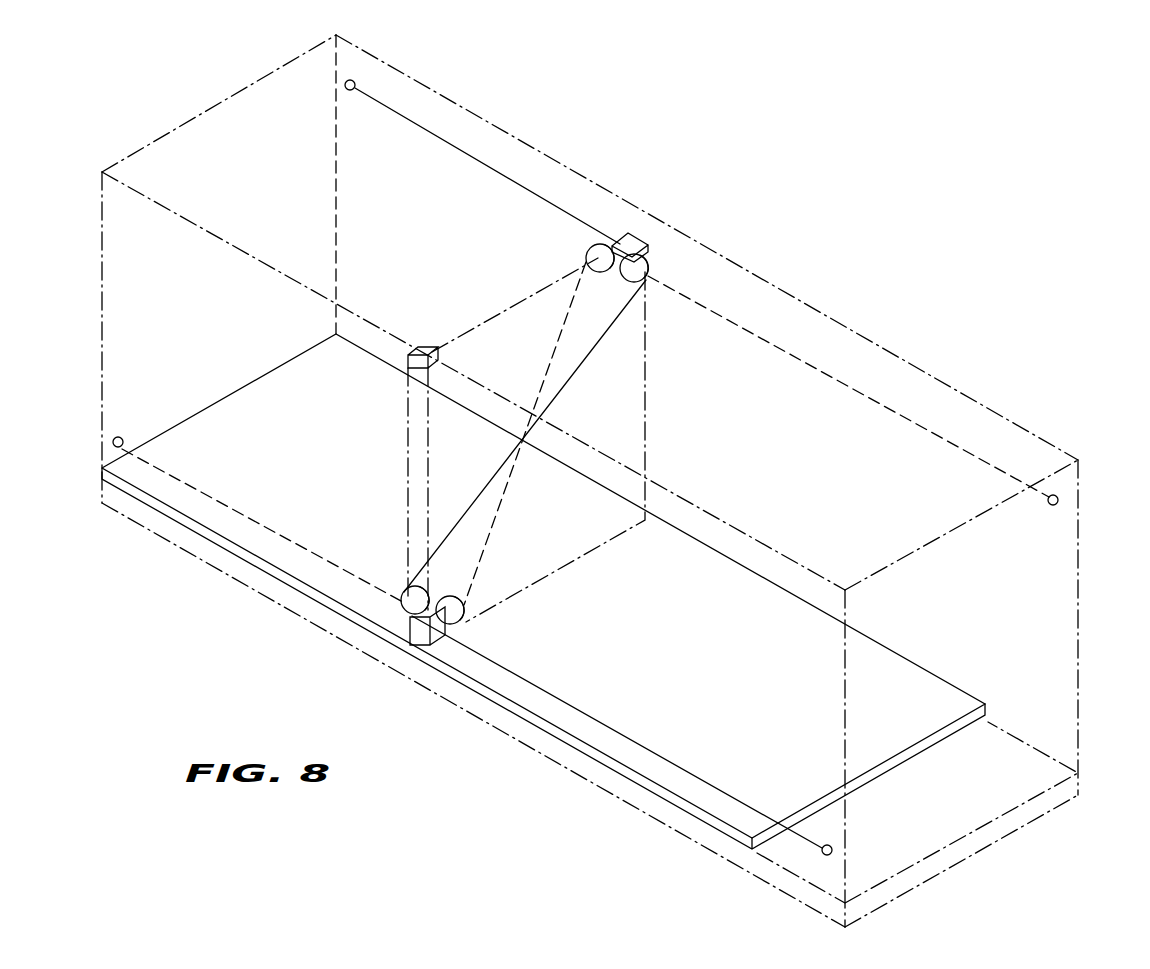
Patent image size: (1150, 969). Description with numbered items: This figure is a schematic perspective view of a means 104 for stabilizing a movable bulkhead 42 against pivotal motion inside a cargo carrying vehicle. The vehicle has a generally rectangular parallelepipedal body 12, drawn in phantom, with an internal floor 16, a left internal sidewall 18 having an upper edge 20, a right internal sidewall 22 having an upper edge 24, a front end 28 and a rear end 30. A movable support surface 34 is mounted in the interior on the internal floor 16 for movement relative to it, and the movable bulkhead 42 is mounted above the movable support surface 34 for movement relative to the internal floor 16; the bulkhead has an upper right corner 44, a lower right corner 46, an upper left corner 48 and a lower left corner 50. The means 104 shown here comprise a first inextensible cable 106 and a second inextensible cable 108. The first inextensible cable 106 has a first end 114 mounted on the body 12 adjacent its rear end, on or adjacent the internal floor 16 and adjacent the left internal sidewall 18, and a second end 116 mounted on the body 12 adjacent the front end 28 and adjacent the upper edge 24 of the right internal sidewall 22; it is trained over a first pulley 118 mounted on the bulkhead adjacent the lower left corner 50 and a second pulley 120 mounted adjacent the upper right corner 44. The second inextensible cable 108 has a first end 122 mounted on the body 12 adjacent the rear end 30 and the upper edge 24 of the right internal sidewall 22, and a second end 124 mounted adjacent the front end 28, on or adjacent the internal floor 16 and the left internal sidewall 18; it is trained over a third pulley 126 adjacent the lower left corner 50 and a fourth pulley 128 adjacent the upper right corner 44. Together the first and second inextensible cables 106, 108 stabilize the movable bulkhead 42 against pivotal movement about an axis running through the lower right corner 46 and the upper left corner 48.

The body 12 is at (586, 481).
The internal floor 16 is at (982, 801).
The left internal sidewall 18 is at (290, 613).
The upper edge 20 is at (288, 272).
The right internal sidewall 22 is at (895, 493).
The upper edge 24 is at (538, 148).
The front end 28 is at (180, 126).
The rear end 30 is at (984, 858).
The movable support surface 34 is at (732, 655).
The movable bulkhead 42 is at (498, 302).
The upper right corner 44 is at (650, 236).
The lower right corner 46 is at (648, 530).
The upper left corner 48 is at (405, 372).
The lower left corner 50 is at (407, 668).
The means for stabilizing 104 is at (557, 398).
The first inextensible cable 106 is at (625, 737).
The second inextensible cable 108 is at (797, 348).
The first end 114 is at (833, 850).
The second end 116 is at (352, 91).
The first pulley 118 is at (405, 588).
The second pulley 120 is at (648, 284).
The first end 122 is at (1059, 500).
The second end 124 is at (124, 436).
The third pulley 126 is at (466, 619).
The fourth pulley 128 is at (590, 250).